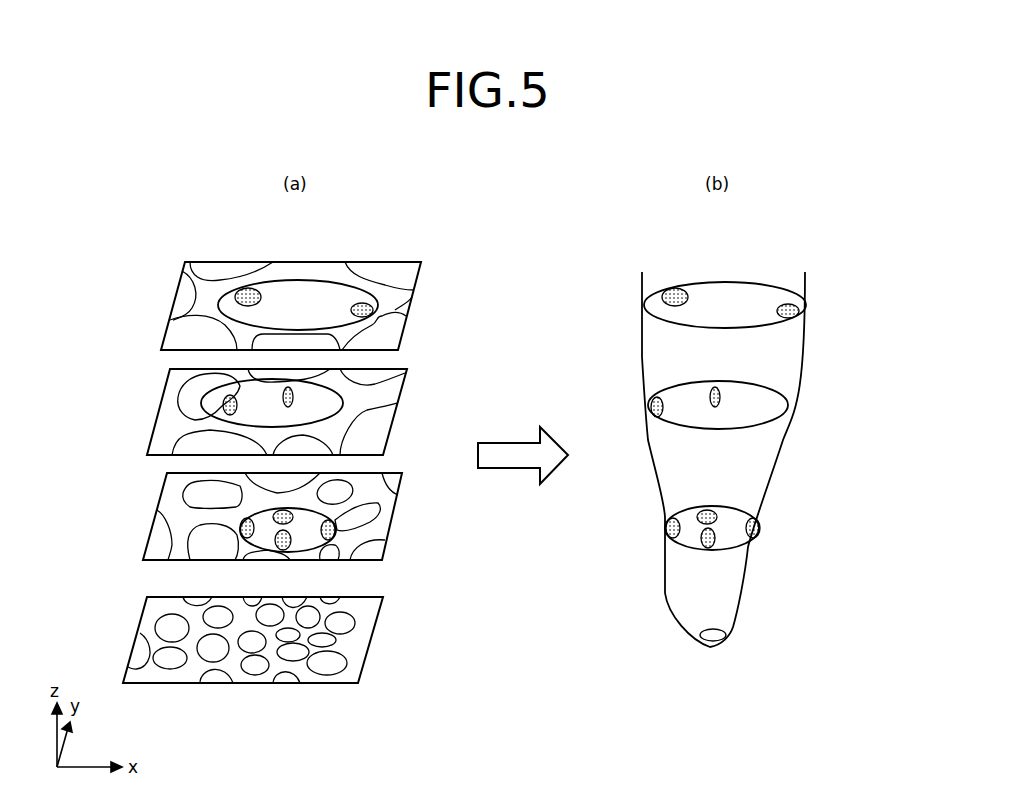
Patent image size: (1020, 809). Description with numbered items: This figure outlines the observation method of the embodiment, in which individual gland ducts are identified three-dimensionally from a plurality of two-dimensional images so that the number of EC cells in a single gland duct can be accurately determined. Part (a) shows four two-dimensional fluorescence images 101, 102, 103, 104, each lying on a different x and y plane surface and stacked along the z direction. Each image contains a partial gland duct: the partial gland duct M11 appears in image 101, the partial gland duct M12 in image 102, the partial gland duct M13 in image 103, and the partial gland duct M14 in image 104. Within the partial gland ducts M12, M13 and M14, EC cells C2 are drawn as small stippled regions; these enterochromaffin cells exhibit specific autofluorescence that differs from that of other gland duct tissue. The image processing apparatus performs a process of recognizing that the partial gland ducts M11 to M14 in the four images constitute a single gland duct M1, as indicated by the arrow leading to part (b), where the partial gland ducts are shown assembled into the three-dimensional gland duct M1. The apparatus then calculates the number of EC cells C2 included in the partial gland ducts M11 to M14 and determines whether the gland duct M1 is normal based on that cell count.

The two-dimensional fluorescence image 101 is at (382, 606).
The two-dimensional fluorescence image 102 is at (400, 494).
The two-dimensional fluorescence image 103 is at (400, 378).
The two-dimensional fluorescence image 104 is at (418, 272).
The partial gland duct M11 is at (288, 633).
The partial gland duct M12 is at (308, 530).
The partial gland duct M13 is at (352, 405).
The partial gland duct M14 is at (350, 295).
The gland duct M1 is at (805, 346).
The EC cell C2 is at (226, 297).